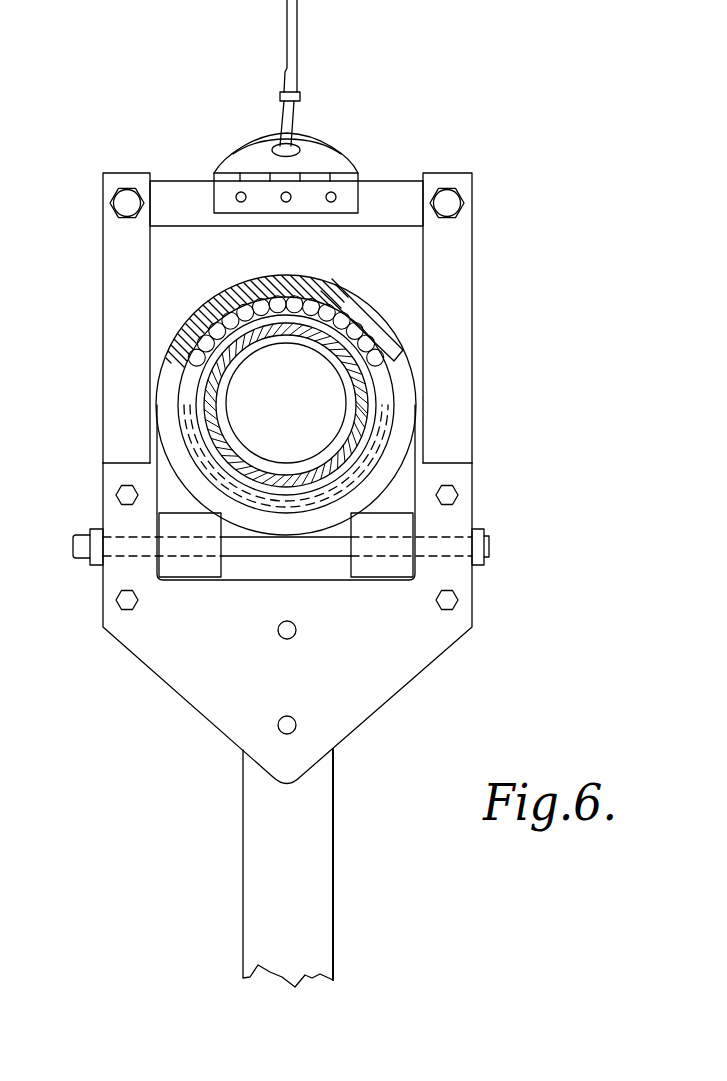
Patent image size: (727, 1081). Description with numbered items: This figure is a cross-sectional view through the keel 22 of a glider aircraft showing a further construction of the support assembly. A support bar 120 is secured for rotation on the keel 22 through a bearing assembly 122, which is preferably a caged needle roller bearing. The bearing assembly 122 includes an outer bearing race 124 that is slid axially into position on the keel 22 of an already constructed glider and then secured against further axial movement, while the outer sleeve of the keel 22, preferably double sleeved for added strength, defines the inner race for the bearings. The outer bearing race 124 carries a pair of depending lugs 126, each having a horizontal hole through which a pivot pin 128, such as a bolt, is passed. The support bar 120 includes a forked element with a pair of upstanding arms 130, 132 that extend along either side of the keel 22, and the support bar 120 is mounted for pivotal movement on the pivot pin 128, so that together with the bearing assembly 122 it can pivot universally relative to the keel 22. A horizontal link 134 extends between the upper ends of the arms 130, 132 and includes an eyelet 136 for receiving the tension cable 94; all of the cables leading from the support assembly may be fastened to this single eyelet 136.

The tension cable 94 is at (292, 54).
The eyelet 136 is at (250, 157).
The horizontal link 134 is at (380, 185).
The upstanding arm 130 is at (118, 429).
The upstanding arm 132 is at (463, 367).
The bearing assembly 122 is at (212, 297).
The outer bearing race 124 is at (345, 300).
The keel 22 is at (317, 352).
The depending lugs 126 is at (187, 568).
The pivot pin 128 is at (309, 550).
The support bar 120 is at (340, 845).